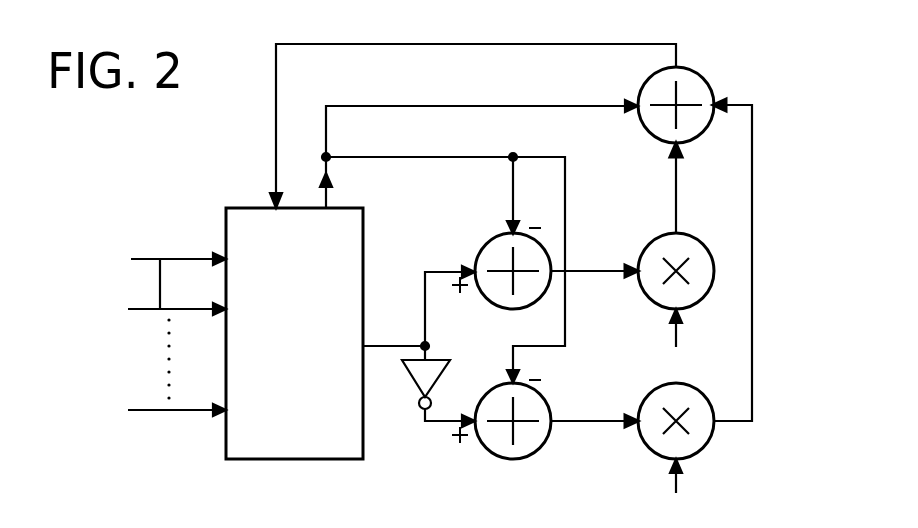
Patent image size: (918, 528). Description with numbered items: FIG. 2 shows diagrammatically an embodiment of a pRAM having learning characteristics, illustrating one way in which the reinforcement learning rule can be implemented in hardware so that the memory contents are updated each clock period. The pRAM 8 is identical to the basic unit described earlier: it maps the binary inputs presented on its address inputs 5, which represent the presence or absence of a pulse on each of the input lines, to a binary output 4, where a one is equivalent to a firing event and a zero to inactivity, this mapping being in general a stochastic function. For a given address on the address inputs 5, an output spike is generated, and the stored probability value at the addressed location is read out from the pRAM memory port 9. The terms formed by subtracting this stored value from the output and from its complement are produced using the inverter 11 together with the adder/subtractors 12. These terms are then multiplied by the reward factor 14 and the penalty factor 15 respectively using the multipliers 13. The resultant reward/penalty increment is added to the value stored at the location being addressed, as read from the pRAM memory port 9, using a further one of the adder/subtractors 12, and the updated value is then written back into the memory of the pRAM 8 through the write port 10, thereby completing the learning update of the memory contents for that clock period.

The binary output 4 is at (366, 348).
The address inputs 5 is at (160, 258).
The pRAM 8 is at (363, 243).
The pRAM memory port 9 is at (328, 206).
The write port 10 is at (279, 201).
The inverter 11 is at (440, 360).
The adder/subtractors 12 is at (710, 88).
The multipliers 13 is at (690, 236).
The reward factor 14 is at (677, 484).
The penalty factor 15 is at (677, 338).